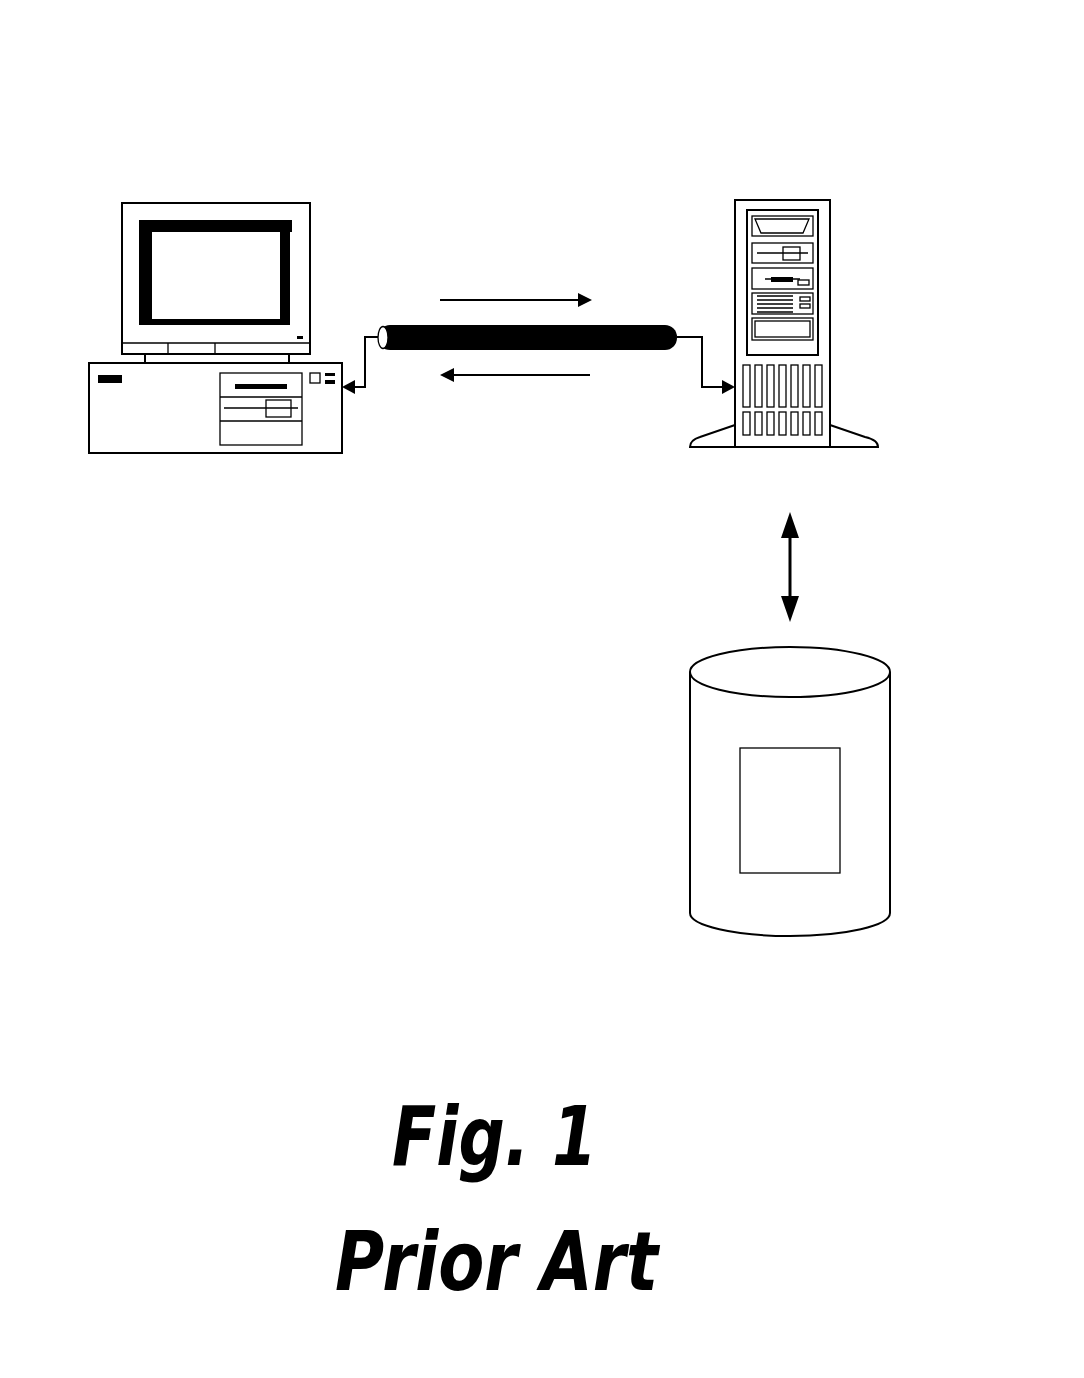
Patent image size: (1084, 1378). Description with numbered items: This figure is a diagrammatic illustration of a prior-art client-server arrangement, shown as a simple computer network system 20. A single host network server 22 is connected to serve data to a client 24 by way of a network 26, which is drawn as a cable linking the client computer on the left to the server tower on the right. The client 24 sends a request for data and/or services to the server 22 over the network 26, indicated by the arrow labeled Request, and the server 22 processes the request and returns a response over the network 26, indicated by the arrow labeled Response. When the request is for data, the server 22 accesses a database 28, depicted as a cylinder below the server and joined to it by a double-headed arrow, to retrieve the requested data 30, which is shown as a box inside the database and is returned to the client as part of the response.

The computer network system 20 is at (694, 82).
The host network server 22 is at (783, 200).
The client 24 is at (217, 203).
The network 26 is at (610, 325).
The database 28 is at (840, 672).
The data 30 is at (840, 808).